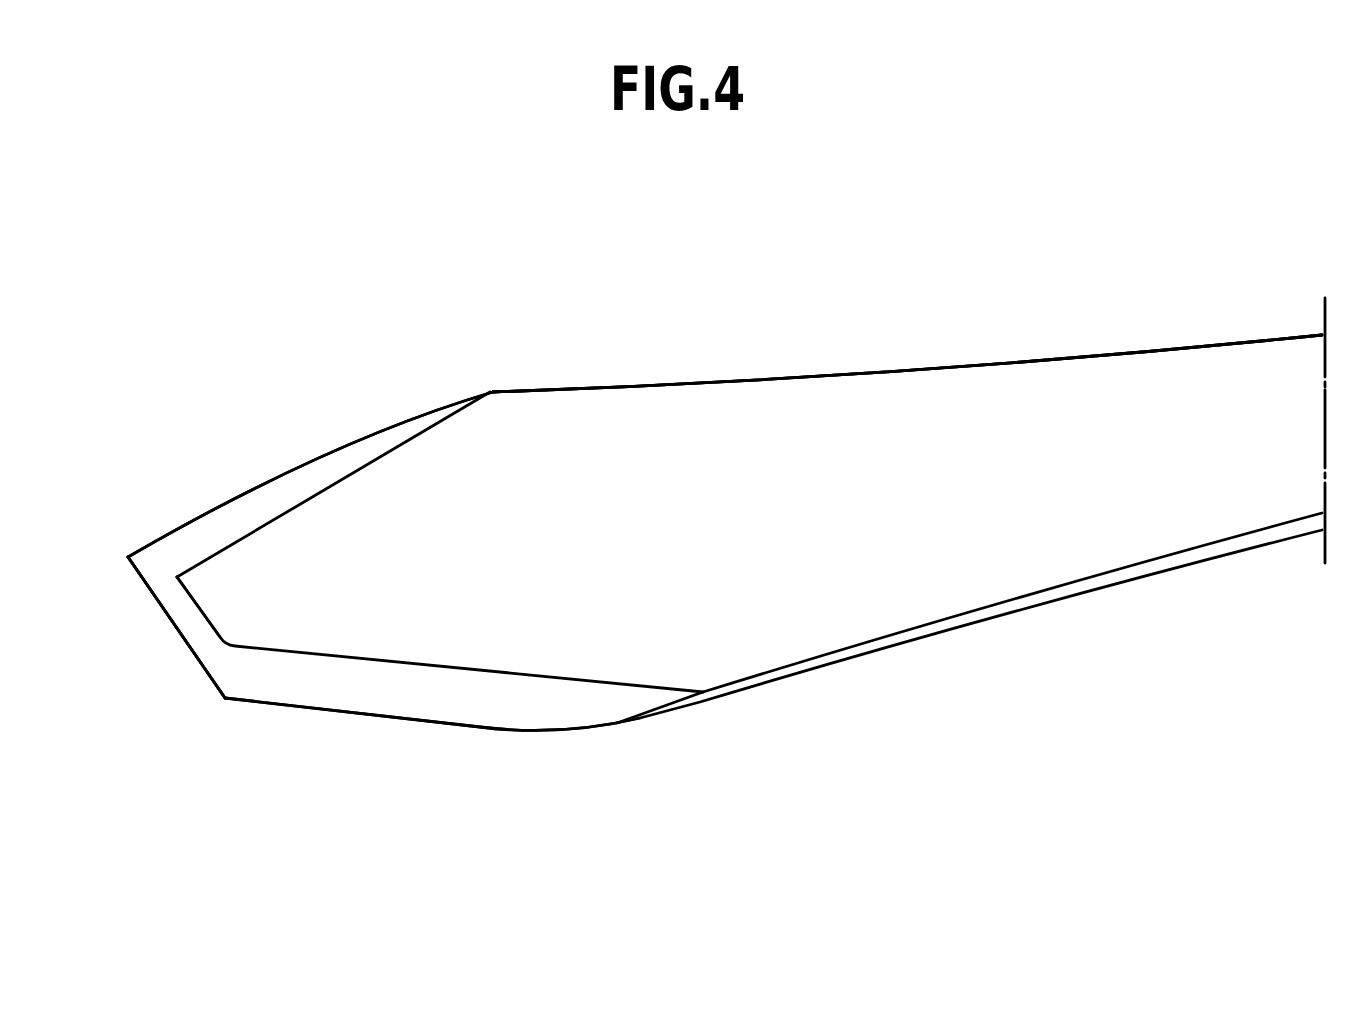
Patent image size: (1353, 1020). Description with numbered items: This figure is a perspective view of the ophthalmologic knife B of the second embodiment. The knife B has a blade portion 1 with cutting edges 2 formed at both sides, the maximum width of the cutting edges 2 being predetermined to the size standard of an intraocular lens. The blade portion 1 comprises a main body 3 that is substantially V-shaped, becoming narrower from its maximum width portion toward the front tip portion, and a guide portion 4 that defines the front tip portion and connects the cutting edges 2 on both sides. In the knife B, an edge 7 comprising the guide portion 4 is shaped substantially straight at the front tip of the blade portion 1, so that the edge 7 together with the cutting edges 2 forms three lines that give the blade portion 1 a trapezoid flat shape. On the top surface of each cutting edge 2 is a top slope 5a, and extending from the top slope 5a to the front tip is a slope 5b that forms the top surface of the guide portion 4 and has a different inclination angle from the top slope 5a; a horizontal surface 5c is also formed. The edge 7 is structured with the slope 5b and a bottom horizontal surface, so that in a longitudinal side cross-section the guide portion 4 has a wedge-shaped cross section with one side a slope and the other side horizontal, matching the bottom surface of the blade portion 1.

The blade portion 1 is at (765, 374).
The cutting edge 2 is at (262, 477).
The main body 3 is at (548, 462).
The guide portion 4 is at (164, 649).
The top slope 5a is at (372, 438).
The slope 5b is at (232, 665).
The horizontal surface 5c is at (580, 630).
The edge 7 is at (200, 664).
The knife B is at (990, 380).